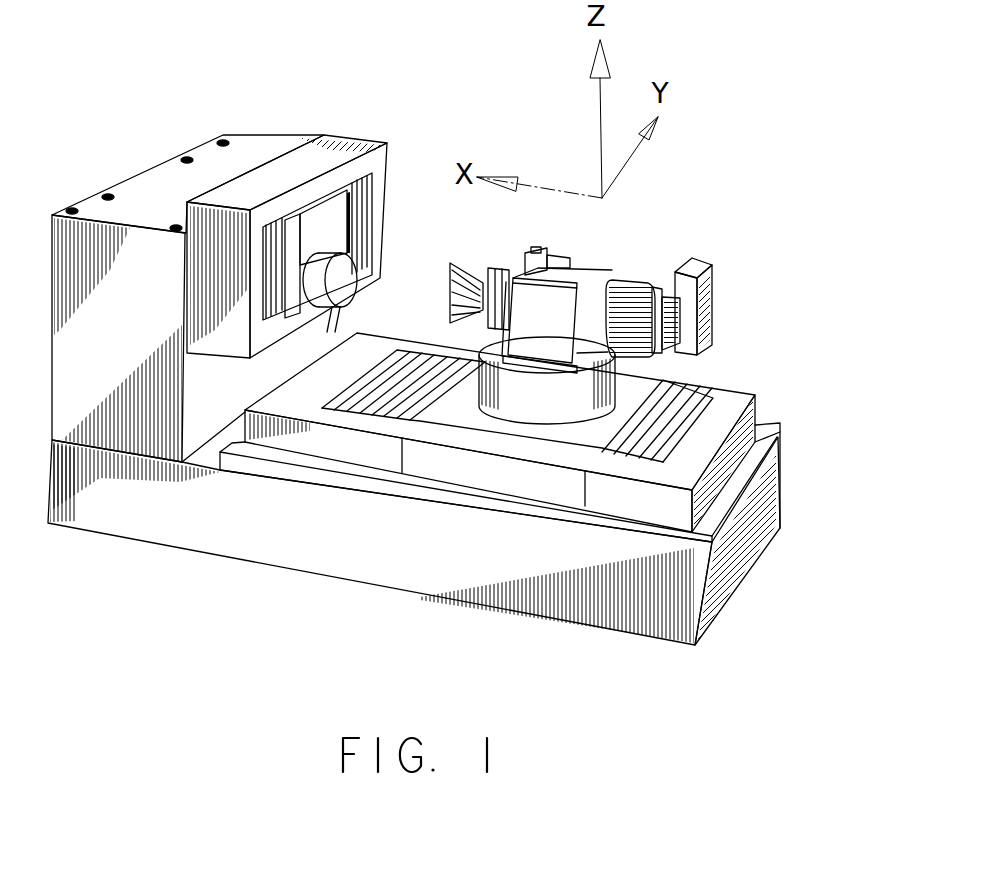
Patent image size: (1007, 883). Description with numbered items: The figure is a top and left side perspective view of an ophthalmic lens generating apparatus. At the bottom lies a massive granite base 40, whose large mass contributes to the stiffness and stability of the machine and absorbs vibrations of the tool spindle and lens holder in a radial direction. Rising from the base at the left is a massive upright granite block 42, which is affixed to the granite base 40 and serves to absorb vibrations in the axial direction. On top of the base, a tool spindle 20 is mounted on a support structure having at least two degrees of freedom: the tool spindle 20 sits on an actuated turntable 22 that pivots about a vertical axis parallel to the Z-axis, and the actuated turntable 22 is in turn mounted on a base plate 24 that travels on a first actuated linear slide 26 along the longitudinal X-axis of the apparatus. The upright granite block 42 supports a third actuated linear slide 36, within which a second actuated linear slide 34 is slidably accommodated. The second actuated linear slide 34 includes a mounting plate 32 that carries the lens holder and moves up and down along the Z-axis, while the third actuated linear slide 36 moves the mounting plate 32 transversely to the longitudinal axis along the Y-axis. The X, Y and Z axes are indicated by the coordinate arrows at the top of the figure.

The tool spindle 20 is at (352, 285).
The actuated turntable 22 is at (613, 358).
The base plate 24 is at (447, 403).
The first actuated linear slide 26 is at (727, 400).
The mounting plate 32 is at (357, 208).
The second actuated linear slide 34 is at (407, 202).
The third actuated linear slide 36 is at (293, 167).
The granite base 40 is at (432, 560).
The upright granite block 42 is at (197, 177).